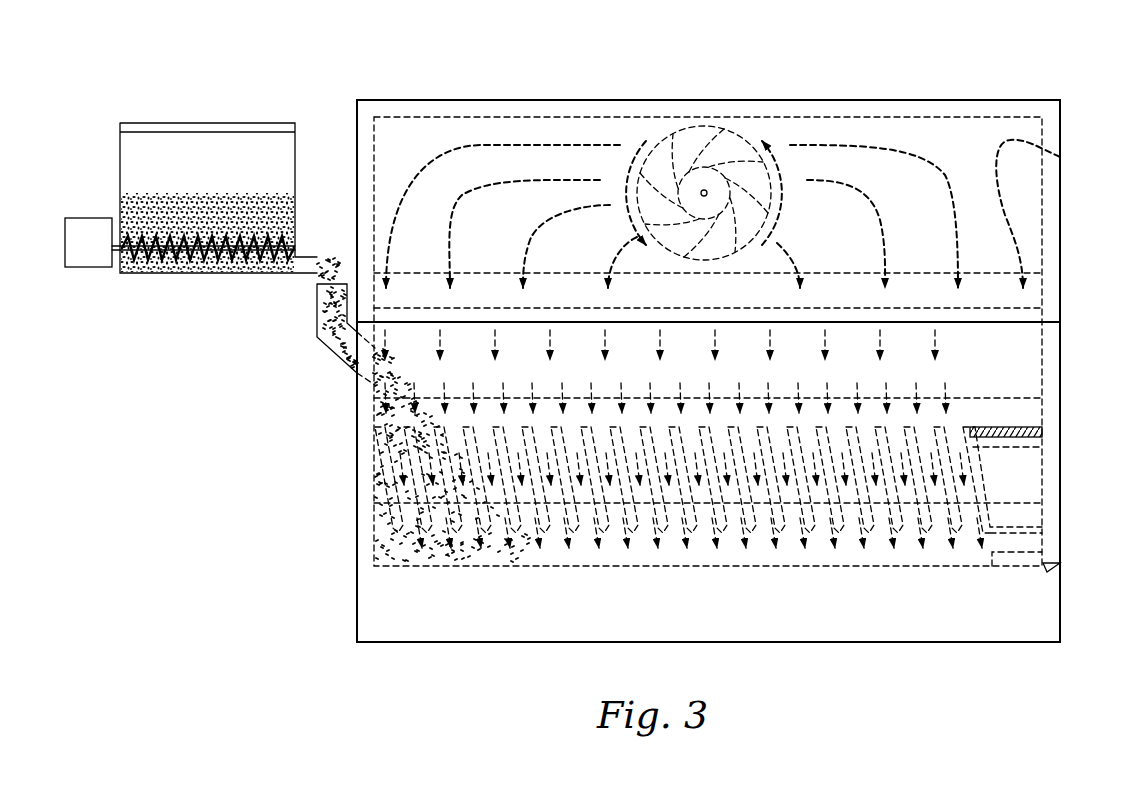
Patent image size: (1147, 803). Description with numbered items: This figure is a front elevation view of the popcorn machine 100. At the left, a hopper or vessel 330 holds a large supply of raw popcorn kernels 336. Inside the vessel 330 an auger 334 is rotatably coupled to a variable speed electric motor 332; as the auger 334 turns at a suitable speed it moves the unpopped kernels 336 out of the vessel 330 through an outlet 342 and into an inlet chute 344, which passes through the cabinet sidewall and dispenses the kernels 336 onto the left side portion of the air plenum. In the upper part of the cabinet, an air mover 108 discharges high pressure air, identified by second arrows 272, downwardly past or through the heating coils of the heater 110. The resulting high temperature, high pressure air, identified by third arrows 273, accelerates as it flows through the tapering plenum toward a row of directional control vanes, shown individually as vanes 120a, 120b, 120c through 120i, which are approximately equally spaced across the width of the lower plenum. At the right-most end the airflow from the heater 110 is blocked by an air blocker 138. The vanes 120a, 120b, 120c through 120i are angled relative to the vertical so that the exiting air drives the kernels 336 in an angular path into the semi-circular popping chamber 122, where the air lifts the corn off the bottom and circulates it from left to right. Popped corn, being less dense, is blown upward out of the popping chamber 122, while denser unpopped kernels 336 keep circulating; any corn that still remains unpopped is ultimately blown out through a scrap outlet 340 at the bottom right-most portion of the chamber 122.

The popcorn machine 100 is at (989, 73).
The air mover 108 is at (743, 137).
The heater 110 is at (998, 273).
The directional control vane 120a is at (385, 490).
The directional control vane 120b is at (417, 437).
The directional control vane 120c is at (447, 450).
The directional control vane 120i is at (966, 440).
The popping chamber 122 is at (671, 553).
The air blocker 138 is at (1010, 427).
The second arrows 272 is at (555, 180).
The third arrows 273 is at (881, 357).
The vessel 330 is at (178, 123).
The variable speed electric motor 332 is at (88, 267).
The auger 334 is at (120, 200).
The raw popcorn kernels 336 is at (242, 193).
The scrap outlet 340 is at (1057, 563).
The outlet 342 is at (318, 257).
The inlet chute 344 is at (317, 310).